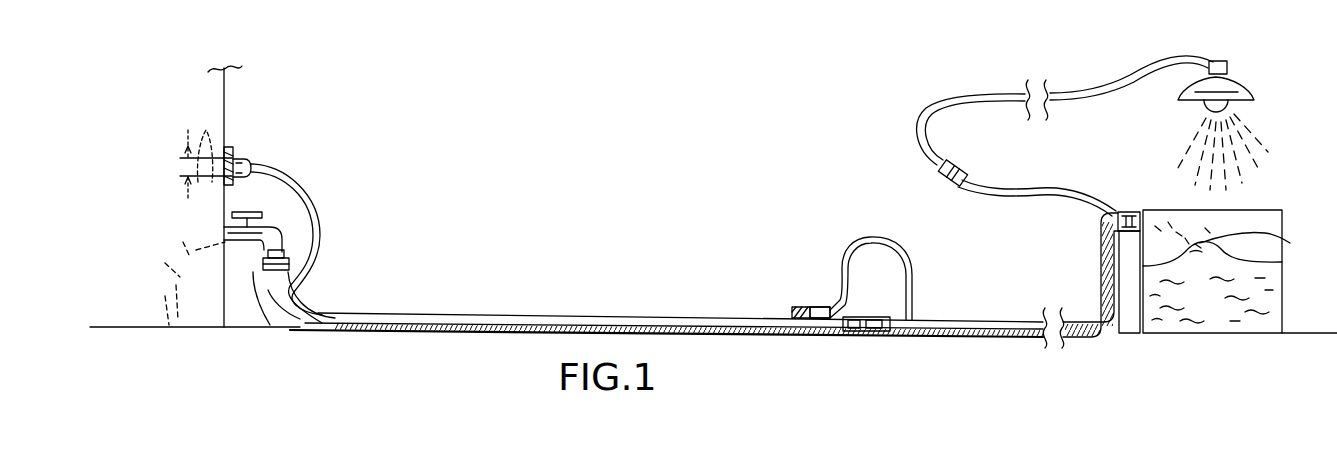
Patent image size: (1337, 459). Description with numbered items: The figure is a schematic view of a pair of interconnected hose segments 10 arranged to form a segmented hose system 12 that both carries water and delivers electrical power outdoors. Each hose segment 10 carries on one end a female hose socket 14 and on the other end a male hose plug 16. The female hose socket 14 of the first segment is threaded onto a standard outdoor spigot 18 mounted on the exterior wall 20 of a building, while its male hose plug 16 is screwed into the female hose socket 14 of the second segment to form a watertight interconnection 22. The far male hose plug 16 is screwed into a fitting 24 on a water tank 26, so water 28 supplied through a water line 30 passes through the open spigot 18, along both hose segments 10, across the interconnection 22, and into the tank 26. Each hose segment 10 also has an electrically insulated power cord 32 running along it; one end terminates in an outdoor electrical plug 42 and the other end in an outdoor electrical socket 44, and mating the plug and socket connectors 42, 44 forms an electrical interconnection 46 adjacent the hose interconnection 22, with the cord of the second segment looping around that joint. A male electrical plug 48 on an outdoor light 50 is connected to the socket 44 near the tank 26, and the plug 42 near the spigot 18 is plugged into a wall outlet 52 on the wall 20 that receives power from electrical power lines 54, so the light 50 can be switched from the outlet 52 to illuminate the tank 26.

The hose segment 10 is at (528, 315).
The segmented hose system 12 is at (604, 238).
The female hose socket 14 is at (272, 326).
The male hose plug 16 is at (845, 331).
The outdoor spigot 18 is at (224, 226).
The exterior wall 20 is at (225, 117).
The watertight interconnection 22 is at (866, 338).
The fitting 24 is at (1147, 208).
The water tank 26 is at (1332, 200).
The water 28 is at (1290, 243).
The water line 30 is at (166, 272).
The power cord 32 is at (318, 232).
The electrical plug 42 is at (250, 162).
The electrical socket 44 is at (793, 312).
The electrical interconnection 46 is at (801, 282).
The male electrical plug 48 is at (955, 165).
The outdoor light 50 is at (1238, 74).
The electrical wall outlet 52 is at (233, 149).
The electrical power lines 54 is at (204, 130).